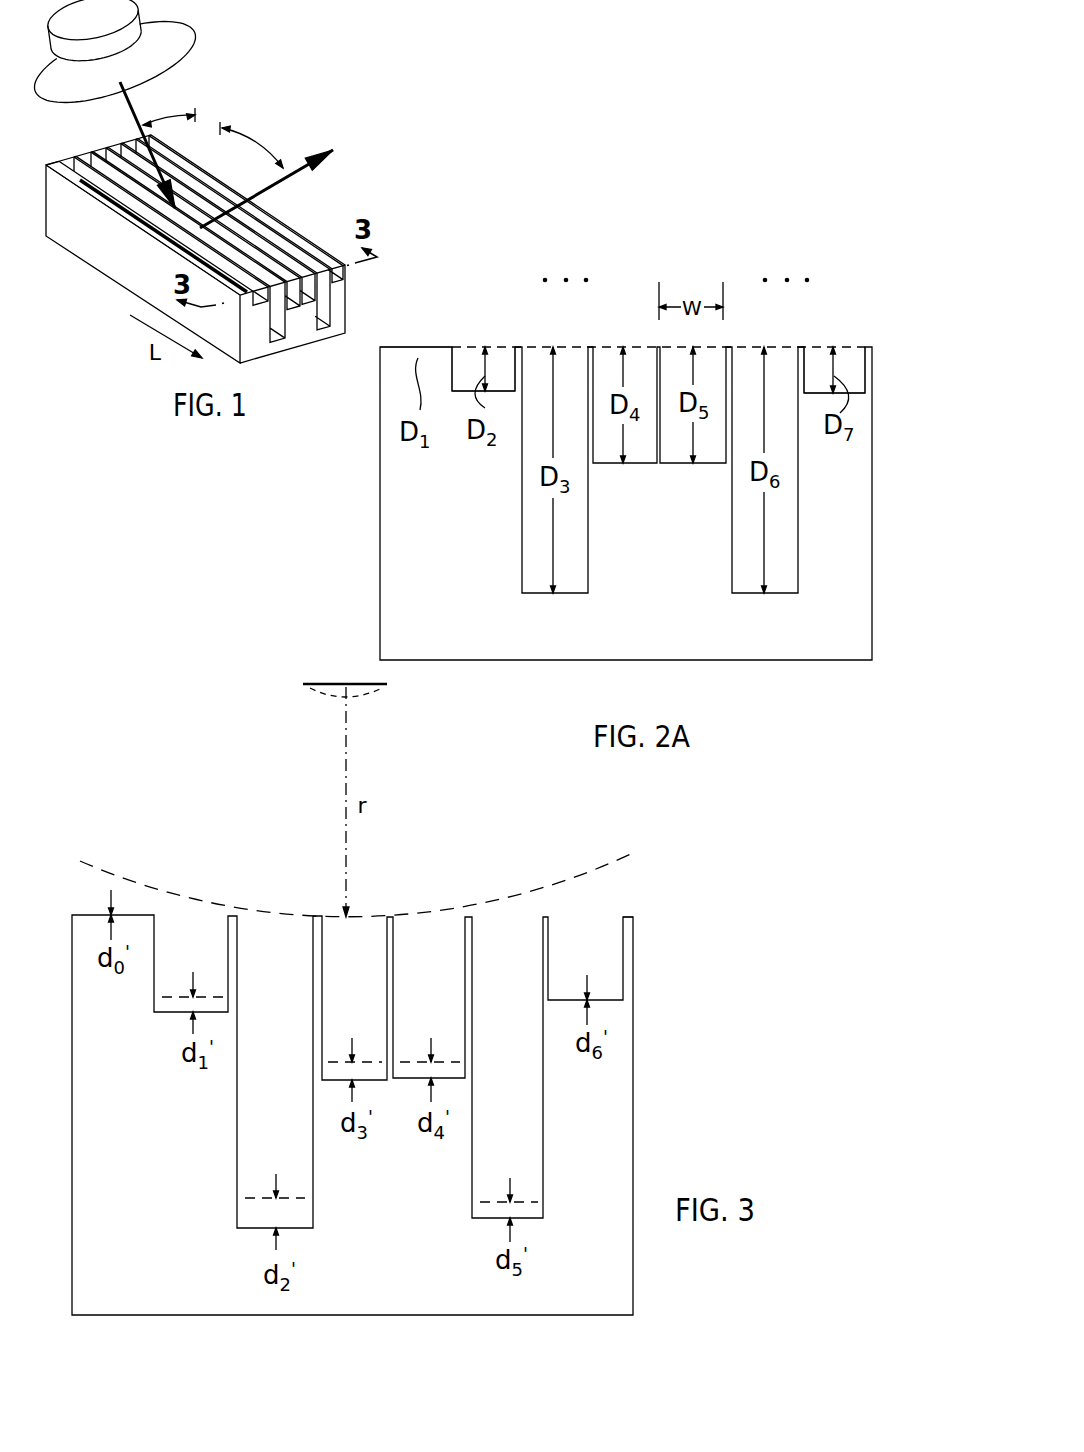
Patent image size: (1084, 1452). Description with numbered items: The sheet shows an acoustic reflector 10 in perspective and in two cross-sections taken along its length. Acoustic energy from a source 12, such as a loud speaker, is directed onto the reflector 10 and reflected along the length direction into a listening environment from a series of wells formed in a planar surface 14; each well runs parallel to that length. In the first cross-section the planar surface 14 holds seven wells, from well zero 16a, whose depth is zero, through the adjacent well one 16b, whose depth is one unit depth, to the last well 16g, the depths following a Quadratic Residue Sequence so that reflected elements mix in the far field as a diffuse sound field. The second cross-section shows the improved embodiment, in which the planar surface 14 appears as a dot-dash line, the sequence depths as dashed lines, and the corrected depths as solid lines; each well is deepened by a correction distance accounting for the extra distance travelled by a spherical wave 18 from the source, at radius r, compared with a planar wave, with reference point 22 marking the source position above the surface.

In FIG. 1, the reflector 10 is at (363, 193).
In FIG. 2A, the reflector 10 is at (621, 273).
In FIG. 3, the reflector 10 is at (248, 883).
In FIG. 1, the source 12 is at (157, 62).
In FIG. 1, the planar surface 14 is at (165, 238).
In FIG. 2A, the planar surface 14 is at (866, 345).
In FIG. 3, the planar surface 14 is at (628, 915).
In FIG. 2A, the well 0 16a is at (419, 346).
In FIG. 2A, the well 1 16b is at (498, 353).
In FIG. 2A, the well 6 16g is at (818, 352).
In FIG. 3, the spherical wave 18 is at (535, 888).
In FIG. 3, the center of curvature / source point 22 is at (370, 693).